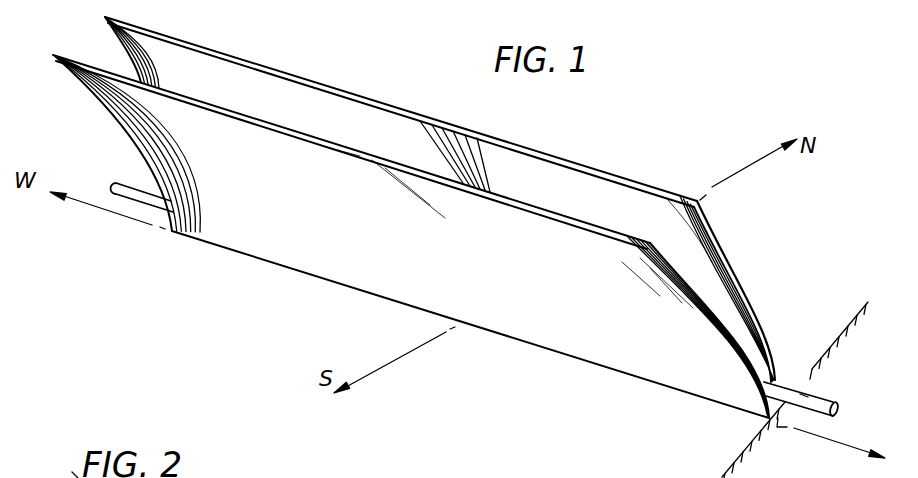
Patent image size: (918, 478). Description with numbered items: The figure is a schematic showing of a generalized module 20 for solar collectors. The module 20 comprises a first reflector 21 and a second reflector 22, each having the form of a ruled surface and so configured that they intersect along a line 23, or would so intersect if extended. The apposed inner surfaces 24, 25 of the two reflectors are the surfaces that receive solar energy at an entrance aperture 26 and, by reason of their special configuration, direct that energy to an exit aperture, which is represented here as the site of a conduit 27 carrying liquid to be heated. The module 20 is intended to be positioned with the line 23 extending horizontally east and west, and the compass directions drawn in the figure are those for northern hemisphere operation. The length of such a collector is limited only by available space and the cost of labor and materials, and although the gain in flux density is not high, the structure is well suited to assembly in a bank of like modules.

The module 20 is at (777, 294).
The first reflector 21 is at (772, 343).
The second reflector 22 is at (657, 360).
The line 23 is at (593, 363).
The inner surface 24 is at (718, 258).
The inner surface 25 is at (698, 278).
The entrance aperture 26 is at (363, 150).
The conduit 27 is at (815, 361).